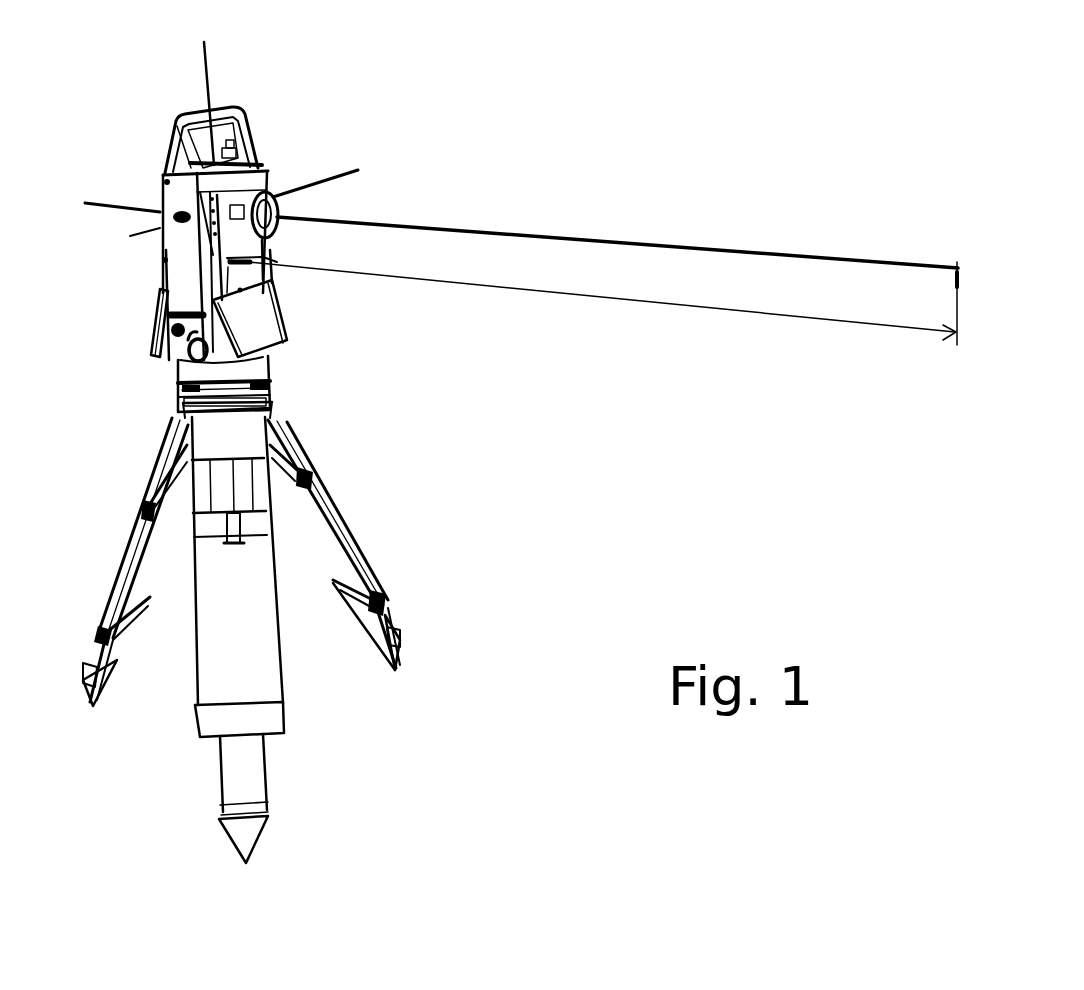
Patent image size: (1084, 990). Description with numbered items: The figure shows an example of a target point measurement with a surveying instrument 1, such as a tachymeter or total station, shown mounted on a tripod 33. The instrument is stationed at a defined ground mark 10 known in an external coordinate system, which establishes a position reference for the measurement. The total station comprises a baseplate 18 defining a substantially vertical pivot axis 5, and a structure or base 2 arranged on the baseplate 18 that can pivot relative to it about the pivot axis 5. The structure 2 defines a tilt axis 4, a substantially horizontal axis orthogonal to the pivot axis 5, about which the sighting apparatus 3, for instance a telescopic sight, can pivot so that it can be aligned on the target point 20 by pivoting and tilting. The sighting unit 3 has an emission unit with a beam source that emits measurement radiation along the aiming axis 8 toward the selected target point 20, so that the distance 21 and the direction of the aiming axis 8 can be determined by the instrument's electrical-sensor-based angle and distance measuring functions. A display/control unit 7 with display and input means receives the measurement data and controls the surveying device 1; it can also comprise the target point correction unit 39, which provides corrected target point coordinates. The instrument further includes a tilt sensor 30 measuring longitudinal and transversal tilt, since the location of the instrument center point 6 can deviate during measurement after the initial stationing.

The surveying instrument 1 is at (231, 239).
The base 2 is at (280, 335).
The sighting apparatus 3 is at (304, 288).
The horizontal axis 4 is at (309, 239).
The vertical axis 5 is at (230, 126).
The instrument center point 6 is at (290, 218).
The display/control unit 7 is at (130, 342).
The aiming axis 8 is at (617, 208).
The ground mark 10 is at (334, 640).
The baseplate 18 is at (291, 400).
The target point 20 is at (897, 260).
The distance 21 is at (592, 315).
The tilt sensor 30 is at (125, 374).
The tripod 33 is at (362, 505).
The target point correction unit 39 is at (105, 311).